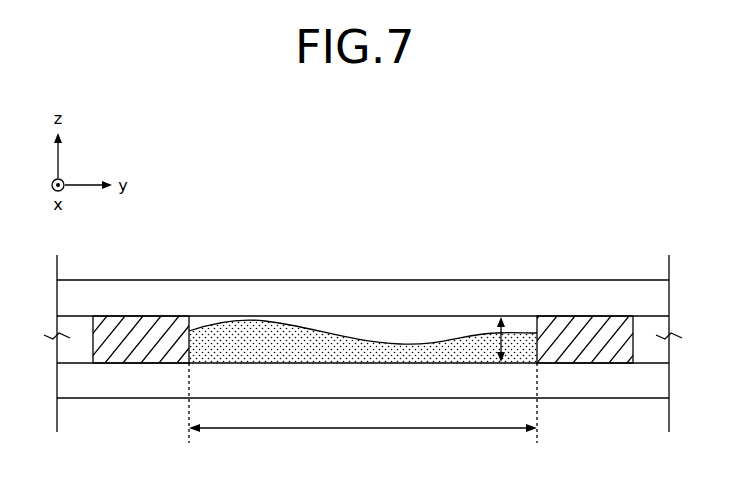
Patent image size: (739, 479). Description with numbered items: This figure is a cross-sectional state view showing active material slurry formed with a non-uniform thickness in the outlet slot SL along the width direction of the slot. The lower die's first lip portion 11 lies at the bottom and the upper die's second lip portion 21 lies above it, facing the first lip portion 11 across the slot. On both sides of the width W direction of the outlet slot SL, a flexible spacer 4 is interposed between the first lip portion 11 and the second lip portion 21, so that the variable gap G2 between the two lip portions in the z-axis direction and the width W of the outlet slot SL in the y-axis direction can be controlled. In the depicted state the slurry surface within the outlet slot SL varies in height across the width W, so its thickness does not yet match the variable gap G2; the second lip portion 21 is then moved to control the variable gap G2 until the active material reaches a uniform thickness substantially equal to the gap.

The second lip portion 21 is at (577, 293).
The first lip portion 11 is at (636, 385).
The flexible spacer 4 is at (128, 347).
The outlet slot SL is at (322, 363).
The variable gap G2 is at (483, 337).
The width W is at (363, 412).